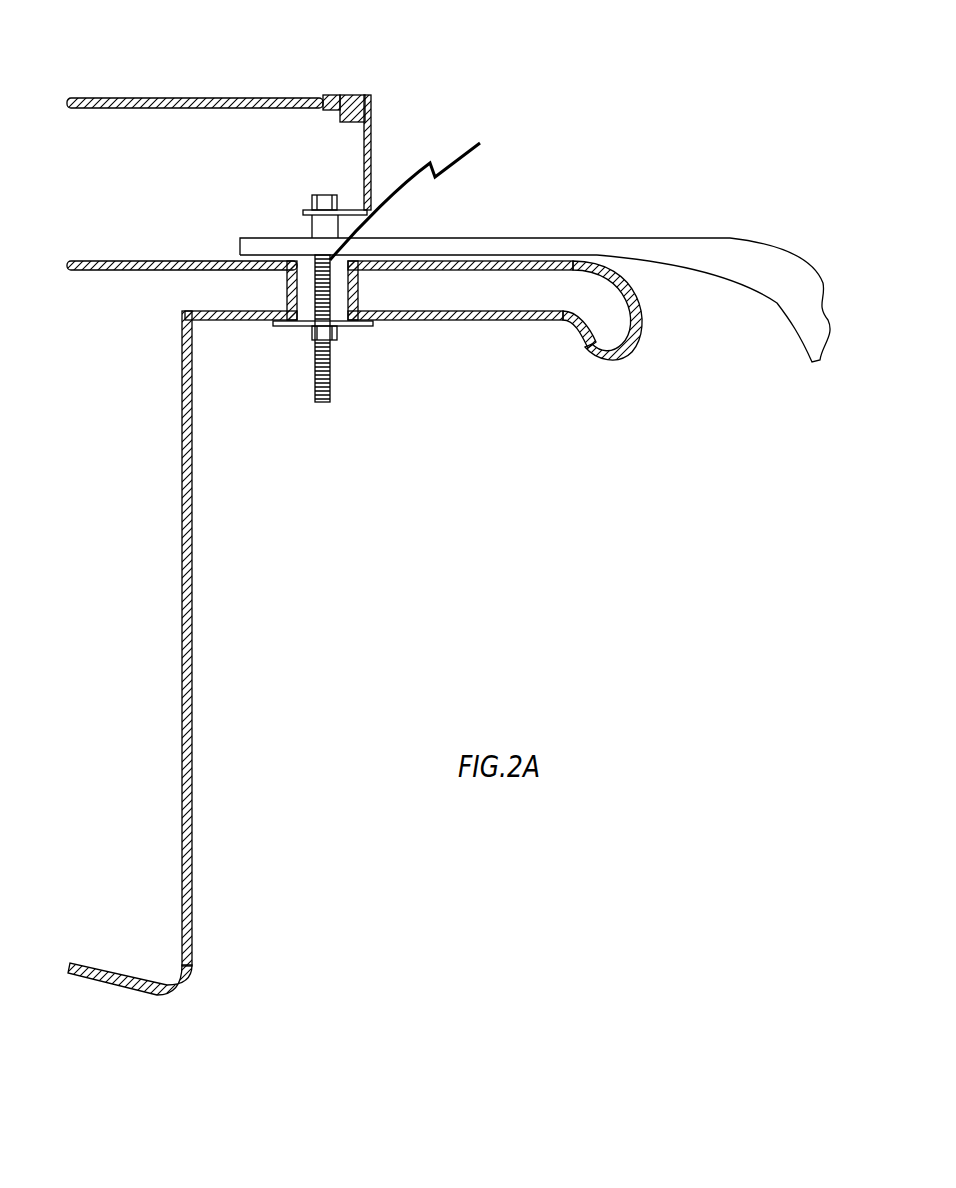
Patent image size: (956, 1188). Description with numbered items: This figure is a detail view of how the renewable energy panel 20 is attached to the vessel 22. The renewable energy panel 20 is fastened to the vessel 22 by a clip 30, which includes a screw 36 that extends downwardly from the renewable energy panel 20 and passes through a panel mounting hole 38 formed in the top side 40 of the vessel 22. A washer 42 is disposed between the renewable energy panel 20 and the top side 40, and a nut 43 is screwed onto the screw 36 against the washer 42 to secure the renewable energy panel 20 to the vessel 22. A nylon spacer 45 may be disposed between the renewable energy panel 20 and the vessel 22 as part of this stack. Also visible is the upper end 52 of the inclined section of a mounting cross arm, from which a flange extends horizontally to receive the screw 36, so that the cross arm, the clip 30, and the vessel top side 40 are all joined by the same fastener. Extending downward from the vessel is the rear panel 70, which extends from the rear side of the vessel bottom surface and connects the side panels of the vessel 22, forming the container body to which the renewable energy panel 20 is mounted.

The renewable energy panel 20 is at (300, 96).
The vessel 22 is at (488, 322).
The clip 30 is at (388, 238).
The screw 36 is at (313, 285).
The panel mounting hole 38 is at (421, 194).
The top side 40 is at (125, 261).
The washer 42 is at (283, 331).
The nut 43 is at (340, 340).
The nylon spacer 45 is at (311, 230).
The upper end 52 is at (606, 236).
The rear panel 70 is at (192, 670).